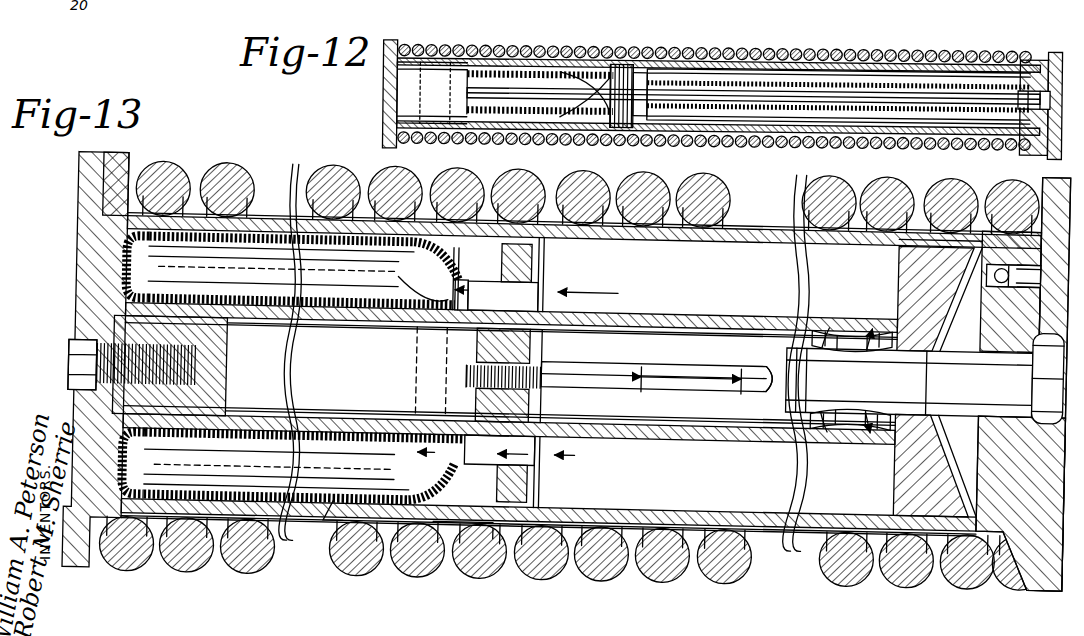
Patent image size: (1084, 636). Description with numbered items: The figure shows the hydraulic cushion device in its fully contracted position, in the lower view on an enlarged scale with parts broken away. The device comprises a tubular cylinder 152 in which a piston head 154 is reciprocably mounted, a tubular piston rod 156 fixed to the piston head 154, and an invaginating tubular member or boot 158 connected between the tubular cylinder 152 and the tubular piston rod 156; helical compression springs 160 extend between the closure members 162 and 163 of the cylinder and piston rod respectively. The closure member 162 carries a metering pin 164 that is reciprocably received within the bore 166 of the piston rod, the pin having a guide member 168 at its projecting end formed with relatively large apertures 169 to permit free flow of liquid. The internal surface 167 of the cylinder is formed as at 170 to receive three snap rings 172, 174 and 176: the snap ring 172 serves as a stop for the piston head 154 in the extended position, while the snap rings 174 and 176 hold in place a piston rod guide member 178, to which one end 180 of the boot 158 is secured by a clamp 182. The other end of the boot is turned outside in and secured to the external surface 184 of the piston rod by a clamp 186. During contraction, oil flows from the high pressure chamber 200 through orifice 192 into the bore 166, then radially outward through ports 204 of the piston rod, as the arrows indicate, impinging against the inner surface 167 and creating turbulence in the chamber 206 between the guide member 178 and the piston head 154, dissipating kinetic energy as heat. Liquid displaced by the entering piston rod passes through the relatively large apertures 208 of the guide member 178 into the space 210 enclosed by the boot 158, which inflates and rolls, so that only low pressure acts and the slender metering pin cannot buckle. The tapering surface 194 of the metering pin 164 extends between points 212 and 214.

In FIG. 12, the tubular cylinder 152 is at (950, 60).
In FIG. 13, the tubular cylinder 152 is at (775, 212).
In FIG. 12, the piston head 154 is at (1010, 63).
In FIG. 13, the piston head 154 is at (940, 212).
In FIG. 13, the tubular piston rod 156 is at (720, 310).
In FIG. 12, the invaginating tubular member or boot 158 is at (500, 55).
In FIG. 13, the invaginating tubular member or boot 158 is at (282, 230).
In FIG. 12, the helical compression springs 160 is at (665, 50).
In FIG. 13, the helical compression springs 160 is at (342, 165).
In FIG. 13, the closure member 162 is at (950, 460).
In FIG. 13, the closure member 163 is at (90, 232).
In FIG. 12, the metering pin 164 is at (790, 87).
In FIG. 13, the metering pin 164 is at (752, 356).
In FIG. 13, the bore 166 is at (650, 312).
In FIG. 13, the internal surface 167 is at (740, 498).
In FIG. 13, the guide member 168 is at (540, 390).
In FIG. 13, the apertures 169 is at (535, 354).
In FIG. 13, the formation for snap rings 170 is at (460, 520).
In FIG. 12, the snap ring 172 is at (668, 122).
In FIG. 13, the snap ring 172 is at (610, 470).
In FIG. 13, the snap ring 174 is at (548, 455).
In FIG. 13, the snap ring 176 is at (461, 526).
In FIG. 12, the piston rod guide member 178 is at (622, 58).
In FIG. 13, the piston rod guide member 178 is at (500, 530).
In FIG. 13, the end of boot 180 is at (456, 283).
In FIG. 13, the clamp 182 is at (508, 235).
In FIG. 13, the external surface 184 is at (235, 297).
In FIG. 13, the clamp 186 is at (420, 298).
In FIG. 13, the orifice 192 is at (945, 345).
In FIG. 13, the tapering surface 194 is at (725, 354).
In FIG. 13, the chamber 200 is at (1020, 212).
In FIG. 13, the orifices or ports 204 is at (852, 312).
In FIG. 12, the chamber 206 is at (900, 70).
In FIG. 13, the chamber 206 is at (895, 200).
In FIG. 13, the apertures 208 is at (576, 374).
In FIG. 13, the space 210 is at (338, 496).
In FIG. 13, the point 212 is at (652, 372).
In FIG. 13, the point 214 is at (935, 360).